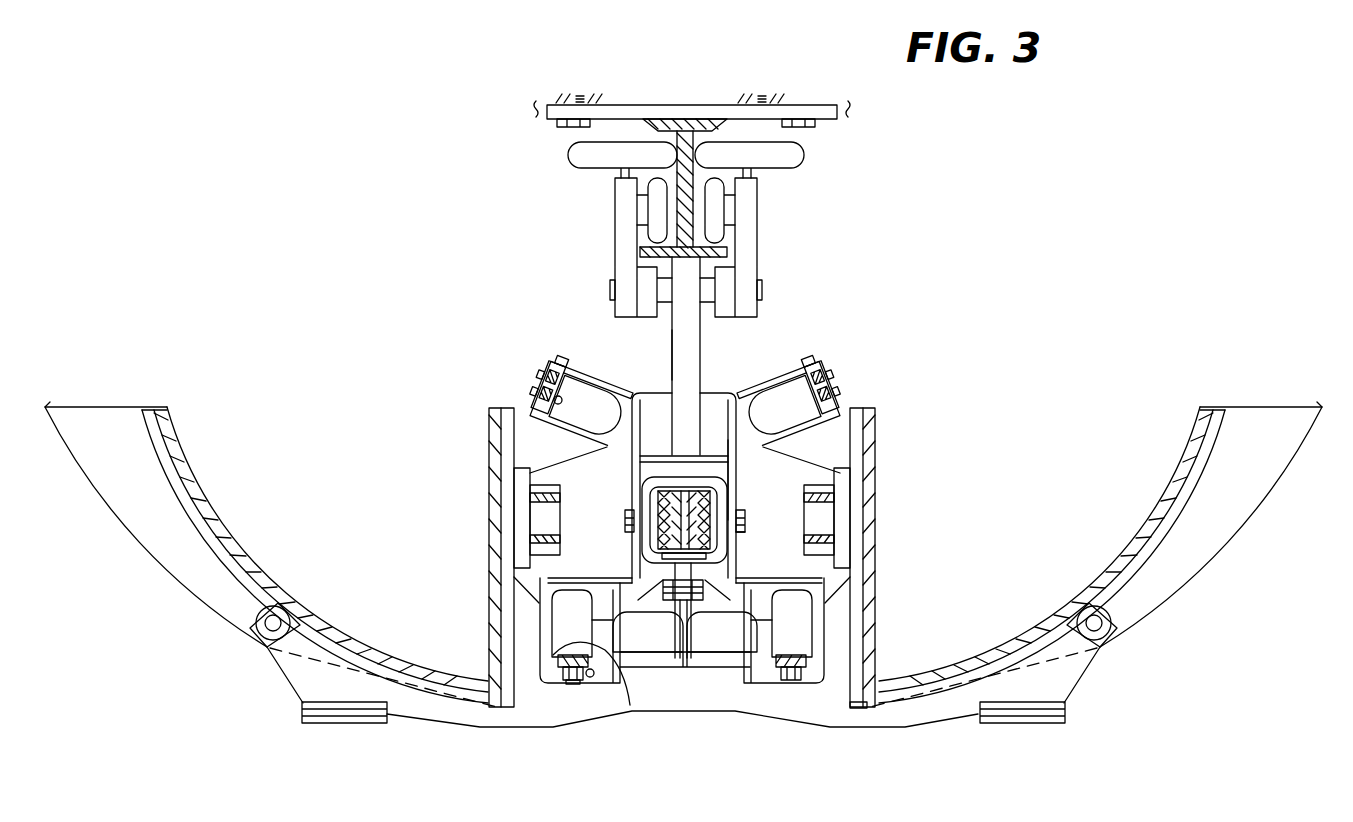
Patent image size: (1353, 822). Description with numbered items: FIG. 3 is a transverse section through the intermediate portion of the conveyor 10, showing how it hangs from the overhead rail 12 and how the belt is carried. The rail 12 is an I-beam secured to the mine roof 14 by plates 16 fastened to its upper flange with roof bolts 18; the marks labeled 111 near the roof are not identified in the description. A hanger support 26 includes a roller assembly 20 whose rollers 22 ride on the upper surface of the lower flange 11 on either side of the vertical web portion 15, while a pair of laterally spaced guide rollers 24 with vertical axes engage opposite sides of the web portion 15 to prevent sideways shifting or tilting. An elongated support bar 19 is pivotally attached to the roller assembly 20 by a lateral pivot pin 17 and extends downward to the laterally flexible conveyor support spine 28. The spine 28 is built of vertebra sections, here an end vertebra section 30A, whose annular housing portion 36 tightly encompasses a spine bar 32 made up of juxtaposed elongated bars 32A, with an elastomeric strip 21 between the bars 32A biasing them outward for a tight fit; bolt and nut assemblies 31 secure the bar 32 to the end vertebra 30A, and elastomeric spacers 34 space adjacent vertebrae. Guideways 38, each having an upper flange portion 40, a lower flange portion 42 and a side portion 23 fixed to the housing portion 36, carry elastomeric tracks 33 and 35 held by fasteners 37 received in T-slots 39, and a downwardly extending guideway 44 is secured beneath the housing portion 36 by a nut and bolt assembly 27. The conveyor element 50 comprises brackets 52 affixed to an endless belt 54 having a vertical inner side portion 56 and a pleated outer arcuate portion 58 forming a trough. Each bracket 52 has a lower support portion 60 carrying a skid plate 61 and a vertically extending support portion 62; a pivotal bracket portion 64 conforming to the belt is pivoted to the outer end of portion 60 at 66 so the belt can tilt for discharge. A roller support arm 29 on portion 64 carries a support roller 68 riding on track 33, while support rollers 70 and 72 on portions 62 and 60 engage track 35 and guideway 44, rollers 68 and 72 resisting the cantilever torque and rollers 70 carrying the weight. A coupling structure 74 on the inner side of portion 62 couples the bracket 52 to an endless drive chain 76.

The conveyor 10 is at (862, 349).
The lower flange 11 is at (718, 254).
The overhead rail 12 is at (678, 118).
The mine roof 14 is at (709, 73).
The web portion 15 is at (686, 162).
The plates 16 is at (821, 112).
The pivot pin 17 is at (760, 300).
The roof bolts 18 is at (562, 125).
The support bar 19 is at (690, 352).
The roller assembly 20 is at (749, 257).
The elastomeric strip 21 is at (707, 487).
The guide roller 22 is at (656, 229).
The side portion 23 is at (734, 490).
The guide rollers 24 is at (590, 153).
The hanger supports 26 is at (701, 352).
The nut and bolt assembly 27 is at (665, 592).
The conveyor support spine 28 is at (737, 471).
The roller support arm 29 is at (843, 437).
The end vertebra section 30A is at (739, 542).
The bolt and nut assemblies 31 is at (746, 520).
The spine bar 32 is at (655, 507).
The elongated bars 32A is at (657, 532).
The elastomeric track 33 is at (552, 403).
The elastomeric spacers 34 is at (648, 553).
The elastomeric track 35 is at (570, 660).
The housing portion 36 is at (653, 465).
The fasteners 37 is at (532, 395).
The guideways 38 is at (684, 483).
The T-slot 39 is at (560, 400).
The upper flange portion 40 is at (547, 363).
The lower flange portion 42 is at (598, 670).
The guideway 44 is at (703, 600).
The conveyor element 50 is at (723, 698).
The brackets 52 is at (841, 595).
The conveyor belt 54 is at (263, 578).
The inner side portion 56 is at (873, 441).
The outer arcuate portion 58 is at (1160, 505).
The lower support portion 60 is at (481, 713).
The skid plates 61 is at (1040, 719).
The vertically extending support portion 62 is at (858, 500).
The pivotal bracket portion 64 is at (183, 570).
The pivotal connection 66 is at (1097, 623).
The support roller 68 is at (607, 410).
The support rollers 70 is at (565, 604).
The support rollers 72 is at (710, 627).
The coupling structure 74 is at (540, 518).
The endless chain 76 is at (540, 491).
The fastener 111 is at (557, 395).